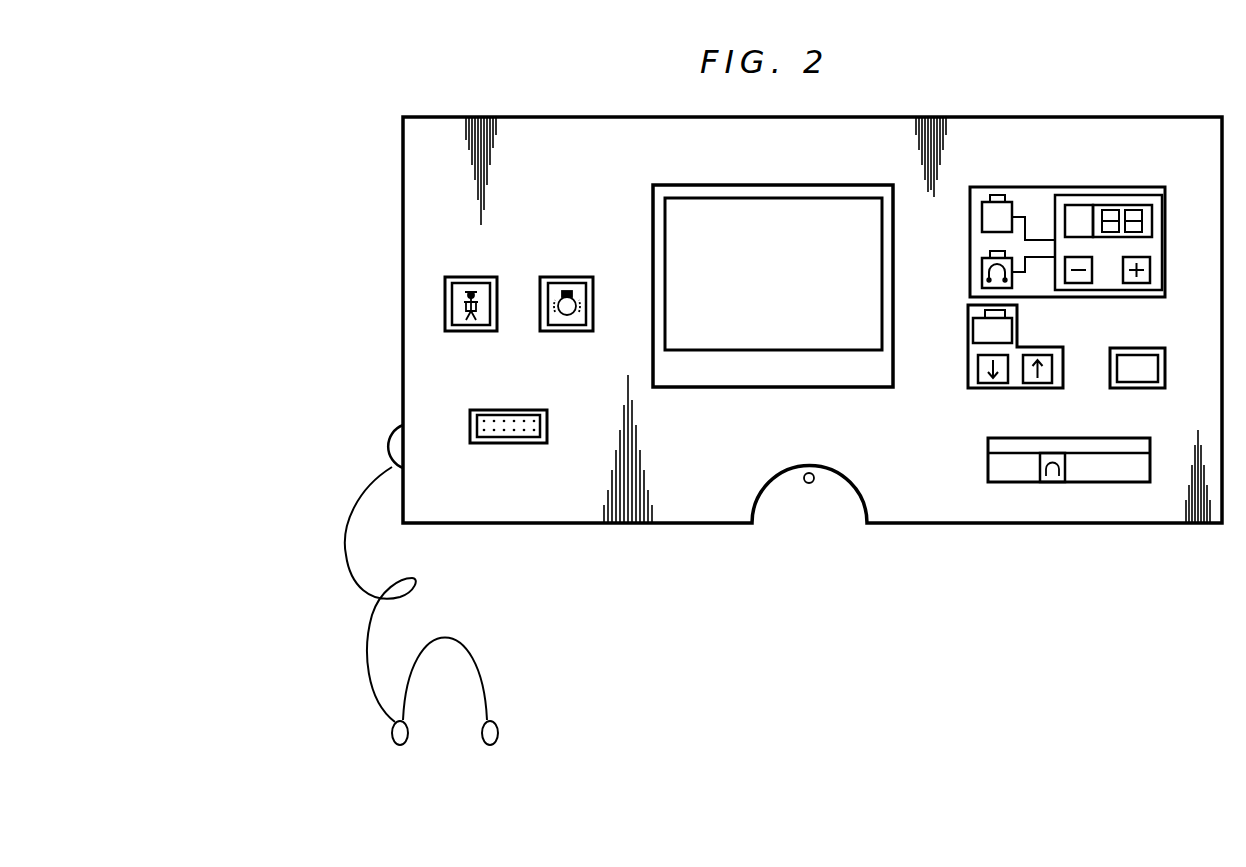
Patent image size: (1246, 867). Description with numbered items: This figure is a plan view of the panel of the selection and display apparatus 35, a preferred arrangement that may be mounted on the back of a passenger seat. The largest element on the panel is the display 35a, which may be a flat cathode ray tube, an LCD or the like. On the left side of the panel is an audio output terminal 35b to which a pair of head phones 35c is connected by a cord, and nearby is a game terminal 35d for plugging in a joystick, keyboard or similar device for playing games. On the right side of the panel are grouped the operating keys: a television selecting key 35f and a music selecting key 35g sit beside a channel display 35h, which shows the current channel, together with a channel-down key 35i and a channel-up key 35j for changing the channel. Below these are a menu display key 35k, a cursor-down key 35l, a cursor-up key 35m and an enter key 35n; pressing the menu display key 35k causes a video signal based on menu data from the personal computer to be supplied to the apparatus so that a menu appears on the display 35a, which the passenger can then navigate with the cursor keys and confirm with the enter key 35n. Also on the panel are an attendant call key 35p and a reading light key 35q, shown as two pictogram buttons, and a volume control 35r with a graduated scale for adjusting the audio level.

The selection and display apparatus 35 is at (720, 515).
The display 35a is at (729, 342).
The audio output terminal 35b is at (390, 438).
The head phones 35c is at (497, 731).
The game terminal 35d is at (523, 430).
The television selecting key 35f is at (970, 218).
The music selecting key 35g is at (970, 272).
The channel display 35h is at (1152, 212).
The channel-down key 35i is at (1076, 283).
The channel-up key 35j is at (1140, 283).
The menu display key 35k is at (968, 320).
The cursor-down key 35l is at (968, 374).
The cursor-up key 35m is at (1036, 383).
The enter key 35n is at (1145, 382).
The attendant call key 35p is at (485, 318).
The reading light key 35q is at (576, 318).
The volume control 35r is at (1096, 478).